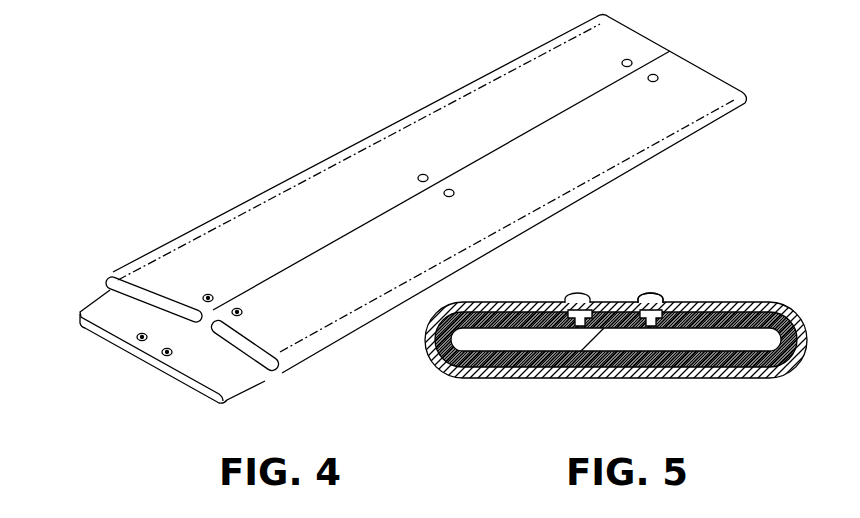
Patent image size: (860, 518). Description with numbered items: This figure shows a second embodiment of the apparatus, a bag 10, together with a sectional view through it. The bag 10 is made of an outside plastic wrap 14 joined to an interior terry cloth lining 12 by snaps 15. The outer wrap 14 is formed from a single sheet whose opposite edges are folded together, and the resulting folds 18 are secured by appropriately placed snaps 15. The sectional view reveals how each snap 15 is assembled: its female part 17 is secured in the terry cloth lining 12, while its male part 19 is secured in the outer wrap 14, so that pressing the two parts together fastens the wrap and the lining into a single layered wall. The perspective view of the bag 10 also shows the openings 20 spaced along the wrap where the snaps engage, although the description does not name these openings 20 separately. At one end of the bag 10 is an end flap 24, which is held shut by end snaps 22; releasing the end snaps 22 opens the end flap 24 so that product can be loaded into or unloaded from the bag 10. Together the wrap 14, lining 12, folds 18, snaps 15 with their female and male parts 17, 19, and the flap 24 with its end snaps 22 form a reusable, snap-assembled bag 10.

In FIG. 4, the bag 10 is at (333, 190).
In FIG. 5, the interior terry cloth lining 12 is at (563, 367).
In FIG. 5, the outside plastic wrap 14 is at (621, 302).
In FIG. 5, the snap 15 is at (669, 293).
In FIG. 5, the female part of the snap 17 is at (665, 327).
In FIG. 4, the folds 18 is at (107, 282).
In FIG. 5, the male part of the snap 19 is at (647, 302).
In FIG. 4, the apertures 20 is at (622, 62).
In FIG. 4, the end snaps 22 is at (235, 316).
In FIG. 4, the end flap 24 is at (122, 327).